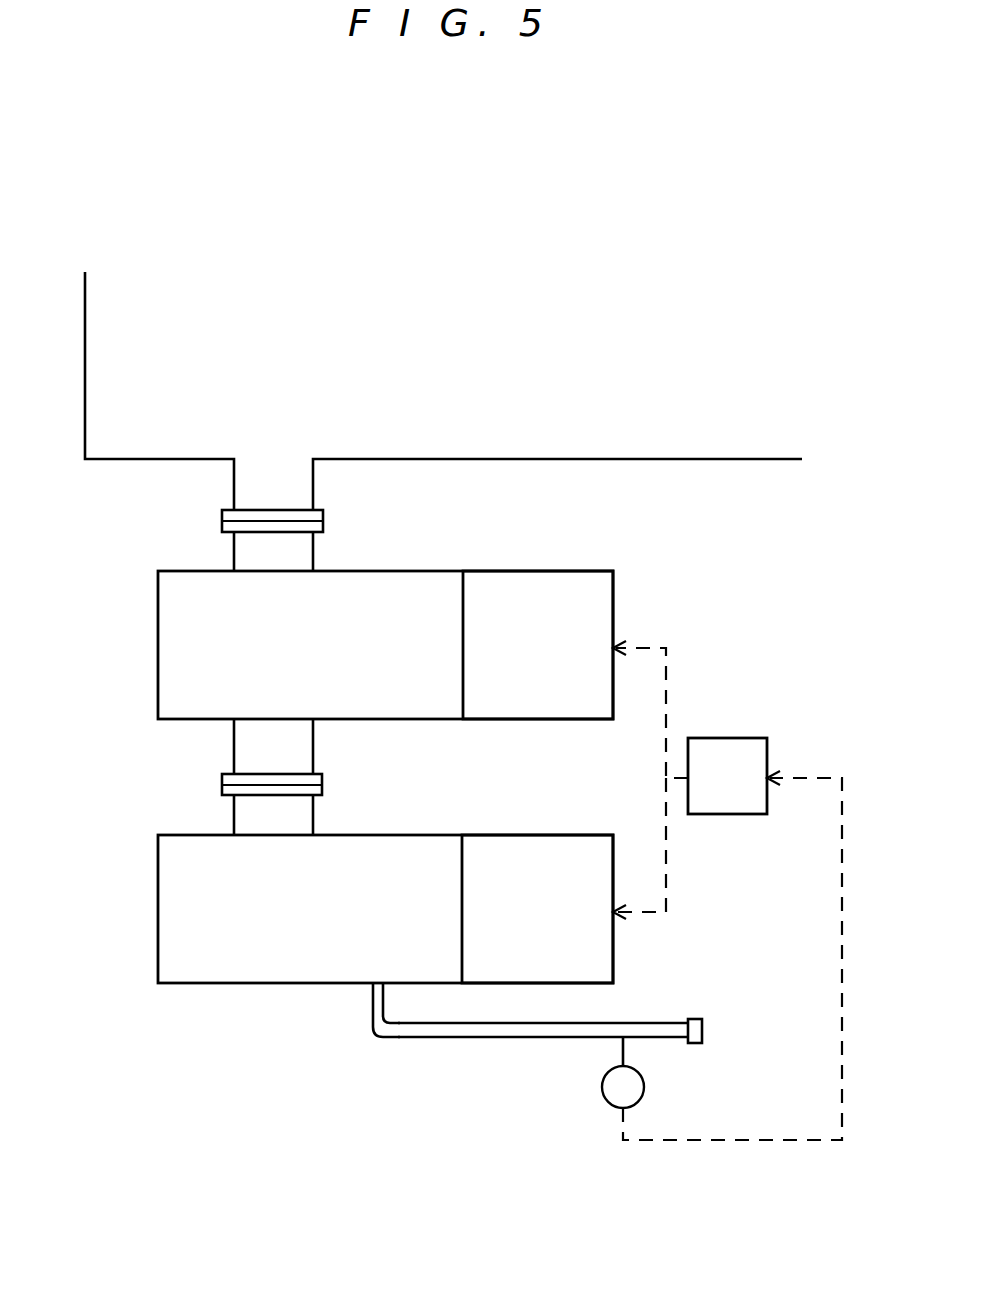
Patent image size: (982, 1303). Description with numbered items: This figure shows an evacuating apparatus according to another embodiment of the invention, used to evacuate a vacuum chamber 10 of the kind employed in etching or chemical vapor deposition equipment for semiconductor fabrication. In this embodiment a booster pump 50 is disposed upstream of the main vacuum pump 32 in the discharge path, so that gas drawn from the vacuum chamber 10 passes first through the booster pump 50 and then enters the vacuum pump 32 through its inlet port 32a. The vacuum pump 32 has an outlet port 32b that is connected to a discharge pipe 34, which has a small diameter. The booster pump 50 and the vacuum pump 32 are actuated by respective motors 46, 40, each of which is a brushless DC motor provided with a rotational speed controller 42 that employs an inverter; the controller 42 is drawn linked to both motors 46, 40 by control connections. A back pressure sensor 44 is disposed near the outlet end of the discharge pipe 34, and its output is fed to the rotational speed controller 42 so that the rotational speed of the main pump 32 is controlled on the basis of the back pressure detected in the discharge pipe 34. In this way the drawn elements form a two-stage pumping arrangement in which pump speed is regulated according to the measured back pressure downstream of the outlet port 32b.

The vacuum chamber 10 is at (742, 461).
The booster pump 50 is at (158, 690).
The motor 46 is at (585, 571).
The vacuum pump 32 is at (158, 958).
The inlet port 32a is at (315, 815).
The outlet port 32b is at (372, 988).
The motor 40 is at (583, 837).
The discharge pipe 34 is at (515, 1038).
The back pressure sensor 44 is at (645, 1090).
The rotational speed controller 42 is at (733, 738).